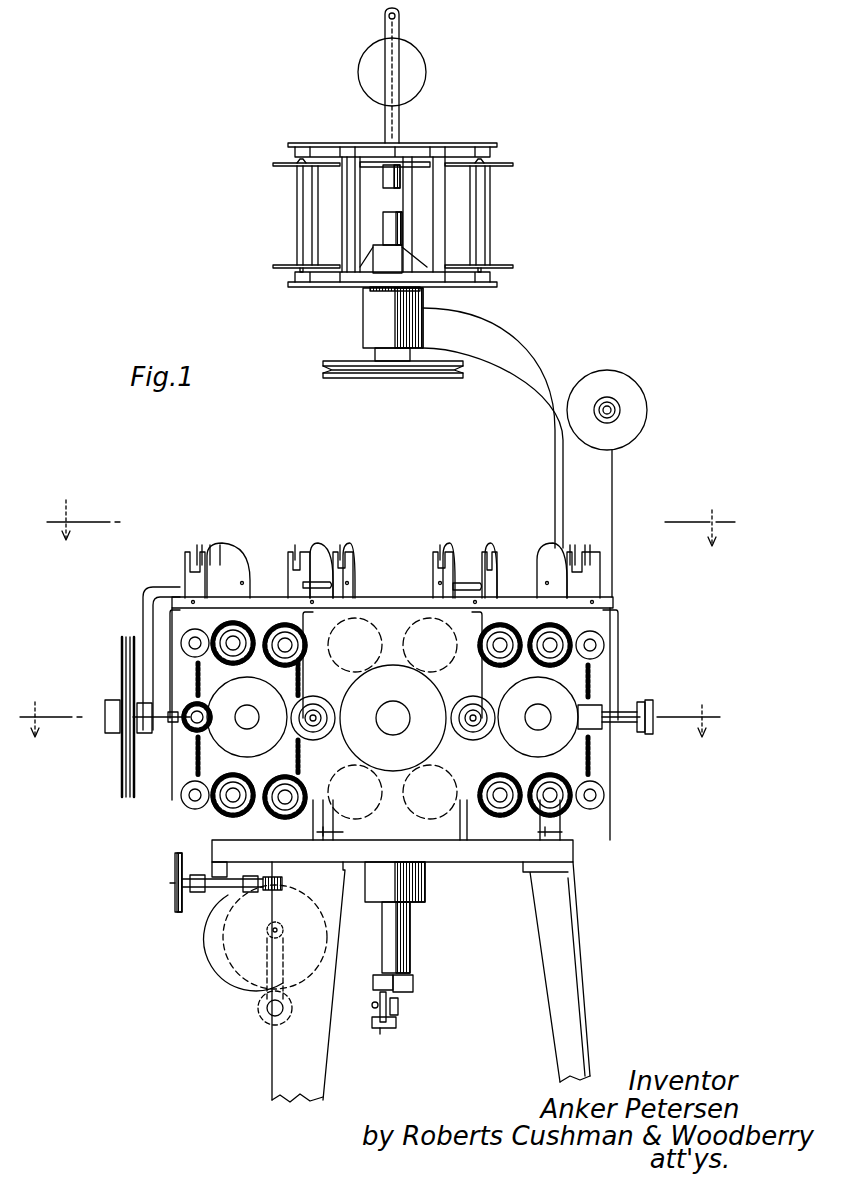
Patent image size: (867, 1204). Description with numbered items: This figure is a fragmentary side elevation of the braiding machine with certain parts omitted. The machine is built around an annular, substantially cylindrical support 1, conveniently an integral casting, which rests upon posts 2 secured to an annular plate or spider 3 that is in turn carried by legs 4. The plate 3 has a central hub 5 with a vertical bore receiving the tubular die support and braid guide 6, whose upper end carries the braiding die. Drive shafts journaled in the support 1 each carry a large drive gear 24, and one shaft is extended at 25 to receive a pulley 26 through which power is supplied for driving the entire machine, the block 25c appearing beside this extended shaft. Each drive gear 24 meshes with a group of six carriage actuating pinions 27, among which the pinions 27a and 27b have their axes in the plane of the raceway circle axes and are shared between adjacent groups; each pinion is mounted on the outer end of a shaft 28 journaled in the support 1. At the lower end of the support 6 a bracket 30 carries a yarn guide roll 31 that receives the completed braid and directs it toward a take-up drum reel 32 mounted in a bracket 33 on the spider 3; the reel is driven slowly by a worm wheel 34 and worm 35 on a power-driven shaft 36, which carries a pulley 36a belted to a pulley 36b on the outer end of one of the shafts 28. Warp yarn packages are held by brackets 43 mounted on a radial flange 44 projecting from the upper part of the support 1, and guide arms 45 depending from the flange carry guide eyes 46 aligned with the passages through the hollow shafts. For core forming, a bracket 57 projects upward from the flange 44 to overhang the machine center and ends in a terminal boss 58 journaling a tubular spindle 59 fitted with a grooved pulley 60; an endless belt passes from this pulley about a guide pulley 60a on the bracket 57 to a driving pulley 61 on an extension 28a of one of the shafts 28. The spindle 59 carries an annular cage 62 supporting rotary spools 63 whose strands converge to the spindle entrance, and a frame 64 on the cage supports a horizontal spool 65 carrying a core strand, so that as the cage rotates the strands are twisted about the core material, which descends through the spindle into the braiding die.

The annular support 1 is at (383, 610).
The posts 2 is at (370, 761).
The annular plate or spider 3 is at (565, 851).
The legs 4 is at (560, 921).
The central hub 5 is at (425, 887).
The tubular die support and braid guide 6 is at (410, 937).
The drive gear 24 is at (392, 718).
The shaft extension 25 is at (160, 722).
The bearing block 25c is at (138, 728).
The pulley 26 is at (122, 757).
The carriage actuating pinions 27 is at (243, 625).
The carriage actuating pinion 27a is at (317, 700).
The carriage actuating pinion 27b is at (466, 700).
The shaft 28 is at (508, 643).
The shaft extension 28a is at (630, 724).
The bracket 30 is at (413, 982).
The yarn guide roll 31 is at (395, 1022).
The take-up drum reel 32 is at (233, 960).
The bracket 33 is at (218, 865).
The worm wheel 34 is at (237, 932).
The worm 35 is at (282, 882).
The power-driven shaft 36 is at (222, 883).
The pulley 36a is at (175, 869).
The pulley 36b is at (180, 740).
The brackets 43 is at (340, 570).
The radial flange 44 is at (418, 600).
The guide arms 45 is at (462, 615).
The guide eyes 46 is at (627, 727).
The bracket 57 is at (558, 472).
The terminal boss 58 is at (366, 306).
The tubular spindle 59 is at (392, 222).
The grooved pulley 60 is at (438, 374).
The guide pulley 60a is at (617, 384).
The driving pulley 61 is at (648, 705).
The annular support or cage 62 is at (458, 288).
The rotary spools 63 is at (300, 208).
The frame 64 is at (398, 125).
The horizontal spool 65 is at (418, 70).